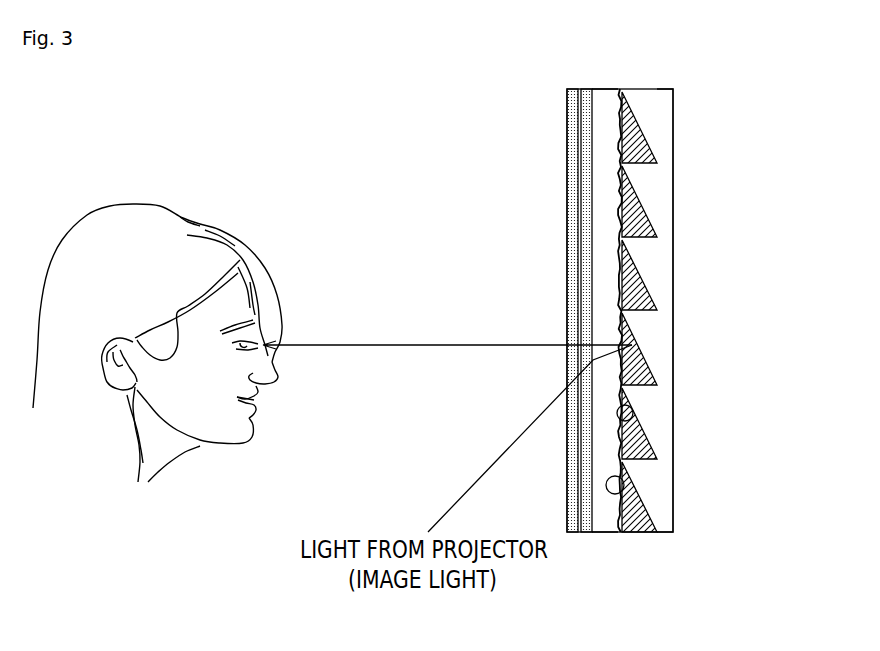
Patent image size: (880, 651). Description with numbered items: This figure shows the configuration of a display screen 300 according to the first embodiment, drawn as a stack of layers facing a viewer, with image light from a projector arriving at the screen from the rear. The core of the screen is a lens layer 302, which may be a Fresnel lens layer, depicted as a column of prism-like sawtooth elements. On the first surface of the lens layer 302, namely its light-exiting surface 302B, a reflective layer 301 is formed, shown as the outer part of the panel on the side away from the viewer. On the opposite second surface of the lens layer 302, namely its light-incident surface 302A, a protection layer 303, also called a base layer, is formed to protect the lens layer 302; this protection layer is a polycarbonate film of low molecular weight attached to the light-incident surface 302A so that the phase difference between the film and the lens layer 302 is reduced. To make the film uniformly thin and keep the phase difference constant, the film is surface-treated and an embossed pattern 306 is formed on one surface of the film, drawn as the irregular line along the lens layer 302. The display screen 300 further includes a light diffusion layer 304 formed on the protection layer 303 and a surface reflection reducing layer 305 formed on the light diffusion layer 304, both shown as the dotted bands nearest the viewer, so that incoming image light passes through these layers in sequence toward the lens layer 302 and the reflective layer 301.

The display screen 300 is at (639, 281).
The reflective layer 301 is at (668, 200).
The lens layer 302 is at (687, 312).
The light-incident surface 302A is at (625, 472).
The light-exiting surface 302B is at (633, 405).
The protection layer 303 is at (602, 150).
The light diffusion layer 304 is at (588, 200).
The surface reflection reducing layer 305 is at (563, 243).
The embossed pattern 306 is at (624, 94).